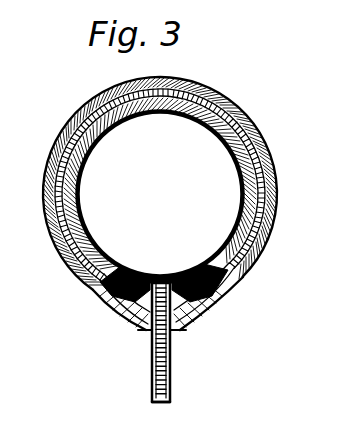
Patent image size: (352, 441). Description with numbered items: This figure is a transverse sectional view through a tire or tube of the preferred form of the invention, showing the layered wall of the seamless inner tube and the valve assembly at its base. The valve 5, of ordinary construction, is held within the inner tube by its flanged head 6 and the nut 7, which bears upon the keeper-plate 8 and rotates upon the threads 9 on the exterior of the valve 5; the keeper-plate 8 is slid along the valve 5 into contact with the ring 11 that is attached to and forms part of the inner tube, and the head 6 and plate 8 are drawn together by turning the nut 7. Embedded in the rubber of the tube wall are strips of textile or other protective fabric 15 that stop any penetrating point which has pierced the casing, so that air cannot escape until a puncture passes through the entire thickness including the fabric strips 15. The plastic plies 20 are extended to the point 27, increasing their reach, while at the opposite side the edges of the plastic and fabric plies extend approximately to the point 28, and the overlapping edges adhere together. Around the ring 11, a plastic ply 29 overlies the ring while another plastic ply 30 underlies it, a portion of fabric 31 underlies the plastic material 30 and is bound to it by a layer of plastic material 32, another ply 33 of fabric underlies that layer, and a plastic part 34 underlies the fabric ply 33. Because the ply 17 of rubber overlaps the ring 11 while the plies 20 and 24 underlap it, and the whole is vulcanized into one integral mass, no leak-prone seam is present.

The valve 5 is at (152, 379).
The flanged head 6 is at (162, 282).
The nut 7 is at (143, 333).
The keeper-plate 8 is at (119, 305).
The threads 9 is at (158, 403).
The ring 11 is at (203, 302).
The fabric strips 15 is at (254, 153).
The ply of rubber 17 is at (196, 119).
The plastic plies 20 is at (256, 190).
The ply 24 is at (223, 103).
The point 27 is at (105, 297).
The point 28 is at (217, 282).
The plastic ply 29 is at (186, 277).
The plastic ply 30 is at (196, 323).
The portion of fabric 31 is at (128, 320).
The layer of plastic material 32 is at (134, 326).
The ply of fabric 33 is at (188, 330).
The plastic part 34 is at (183, 333).